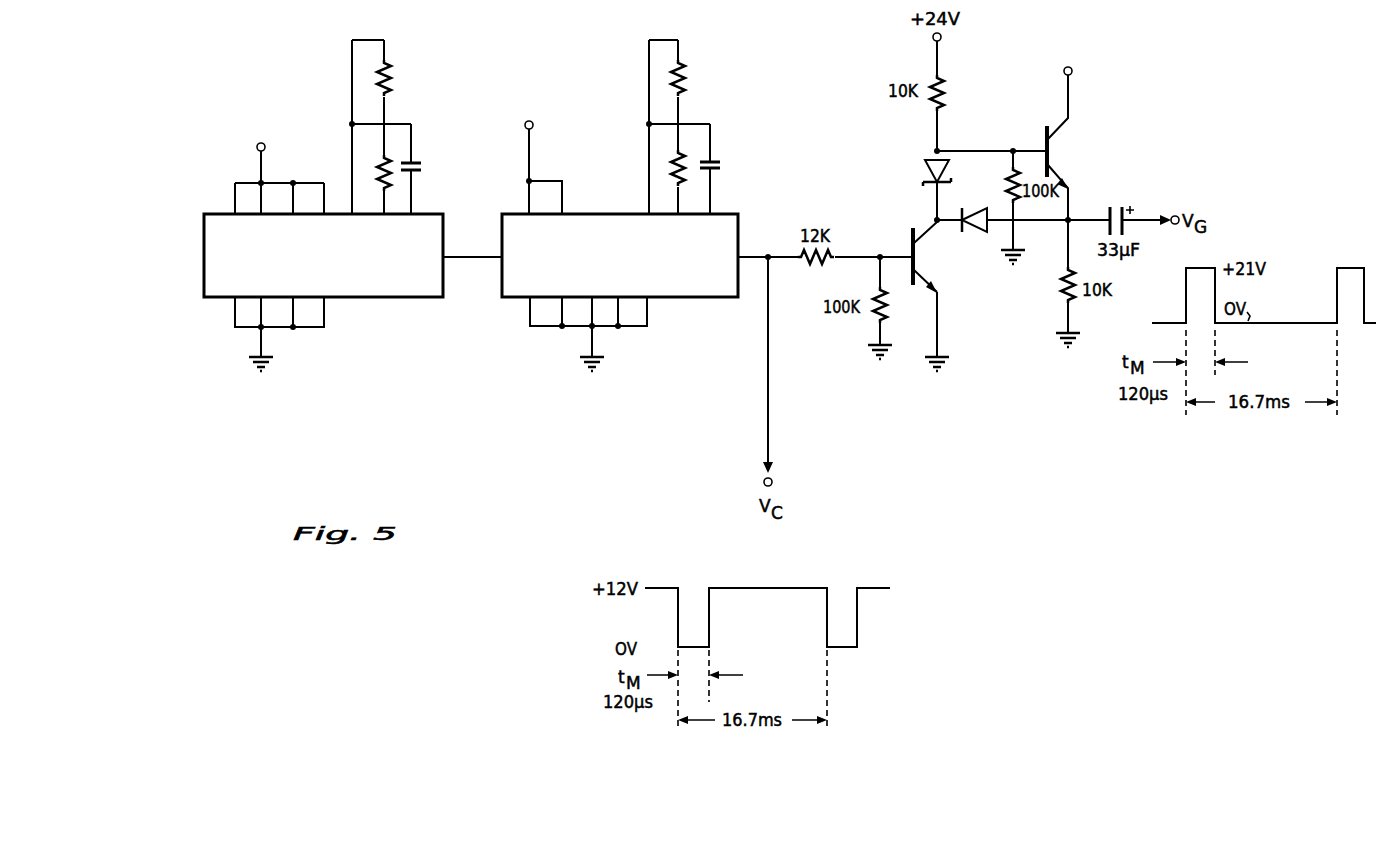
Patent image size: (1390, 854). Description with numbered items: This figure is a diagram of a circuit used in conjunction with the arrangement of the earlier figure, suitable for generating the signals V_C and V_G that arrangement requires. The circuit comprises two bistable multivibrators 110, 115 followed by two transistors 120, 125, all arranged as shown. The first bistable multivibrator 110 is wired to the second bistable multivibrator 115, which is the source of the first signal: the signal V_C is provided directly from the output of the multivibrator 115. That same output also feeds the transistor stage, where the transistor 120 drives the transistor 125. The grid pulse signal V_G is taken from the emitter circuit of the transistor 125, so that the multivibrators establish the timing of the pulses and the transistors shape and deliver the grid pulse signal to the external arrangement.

The bistable multivibrator 110 is at (402, 299).
The bistable multivibrator 115 is at (715, 299).
The transistor 120 is at (962, 272).
The transistor 125 is at (1109, 162).